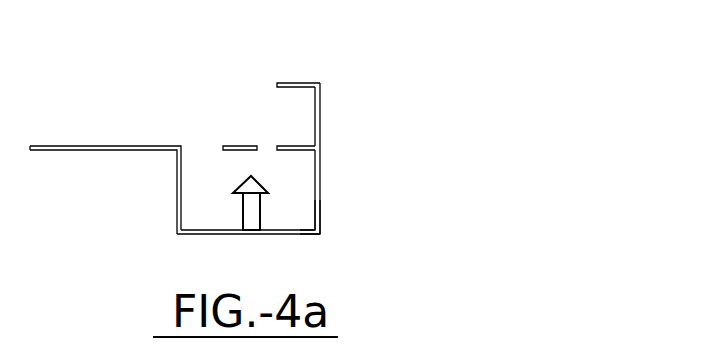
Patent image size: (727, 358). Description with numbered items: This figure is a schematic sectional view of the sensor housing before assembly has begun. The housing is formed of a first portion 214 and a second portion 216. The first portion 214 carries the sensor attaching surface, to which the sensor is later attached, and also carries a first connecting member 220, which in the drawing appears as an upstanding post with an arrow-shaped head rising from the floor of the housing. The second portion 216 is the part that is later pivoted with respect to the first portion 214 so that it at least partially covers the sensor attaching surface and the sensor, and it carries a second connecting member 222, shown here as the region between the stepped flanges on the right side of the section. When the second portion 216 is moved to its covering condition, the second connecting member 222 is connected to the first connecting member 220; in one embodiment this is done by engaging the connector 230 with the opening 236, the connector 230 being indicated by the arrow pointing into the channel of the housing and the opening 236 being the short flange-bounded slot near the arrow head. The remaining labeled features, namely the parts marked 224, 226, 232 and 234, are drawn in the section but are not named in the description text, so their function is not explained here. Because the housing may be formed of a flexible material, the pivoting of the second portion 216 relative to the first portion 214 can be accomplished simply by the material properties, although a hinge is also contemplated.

The first portion 214 is at (193, 232).
The second portion 216 is at (322, 194).
The first connecting member 220 is at (262, 218).
The second connecting member 222 is at (236, 100).
The lower wall portion 224 is at (320, 220).
The shelf flanges 226 is at (295, 82).
The connector 230 is at (208, 197).
The post 232 is at (262, 208).
The arrowhead tip 234 is at (257, 174).
The opening 236 is at (252, 145).